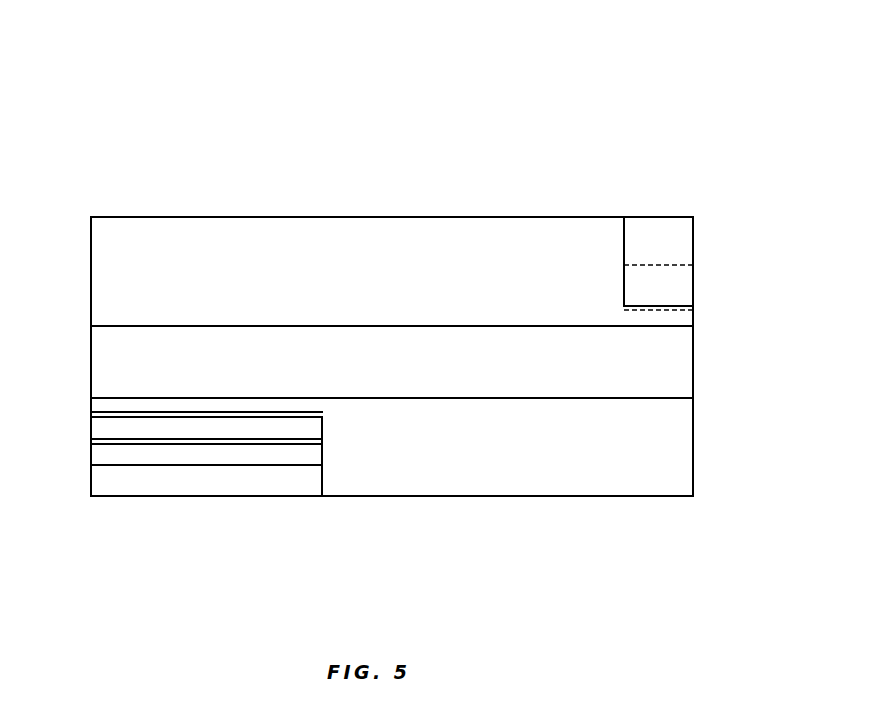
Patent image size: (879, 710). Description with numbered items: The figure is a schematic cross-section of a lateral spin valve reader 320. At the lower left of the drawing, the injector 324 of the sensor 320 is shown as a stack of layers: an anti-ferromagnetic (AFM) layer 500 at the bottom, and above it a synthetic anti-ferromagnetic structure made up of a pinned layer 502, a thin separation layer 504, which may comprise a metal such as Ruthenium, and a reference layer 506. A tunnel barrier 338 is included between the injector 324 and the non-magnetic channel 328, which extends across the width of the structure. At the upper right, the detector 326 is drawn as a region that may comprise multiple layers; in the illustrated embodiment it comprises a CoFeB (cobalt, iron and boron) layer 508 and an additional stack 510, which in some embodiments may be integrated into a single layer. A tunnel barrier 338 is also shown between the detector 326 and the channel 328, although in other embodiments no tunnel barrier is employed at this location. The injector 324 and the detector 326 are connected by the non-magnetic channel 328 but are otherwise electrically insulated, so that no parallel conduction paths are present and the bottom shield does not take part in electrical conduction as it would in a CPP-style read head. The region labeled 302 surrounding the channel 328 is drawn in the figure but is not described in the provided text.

The lateral spin valve reader 320 is at (333, 154).
The detector 326 is at (668, 199).
The additional stack 510 is at (680, 248).
The CoFeB layer 508 is at (679, 282).
The tunnel barrier 338 is at (680, 317).
The shield 302 is at (693, 385).
The non-magnetic channel 328 is at (467, 361).
The reference layer 506 is at (97, 427).
The thin separation layer 504 is at (98, 443).
The pinned layer 502 is at (98, 456).
The anti-ferromagnetic layer 500 is at (98, 484).
The injector 324 is at (172, 503).